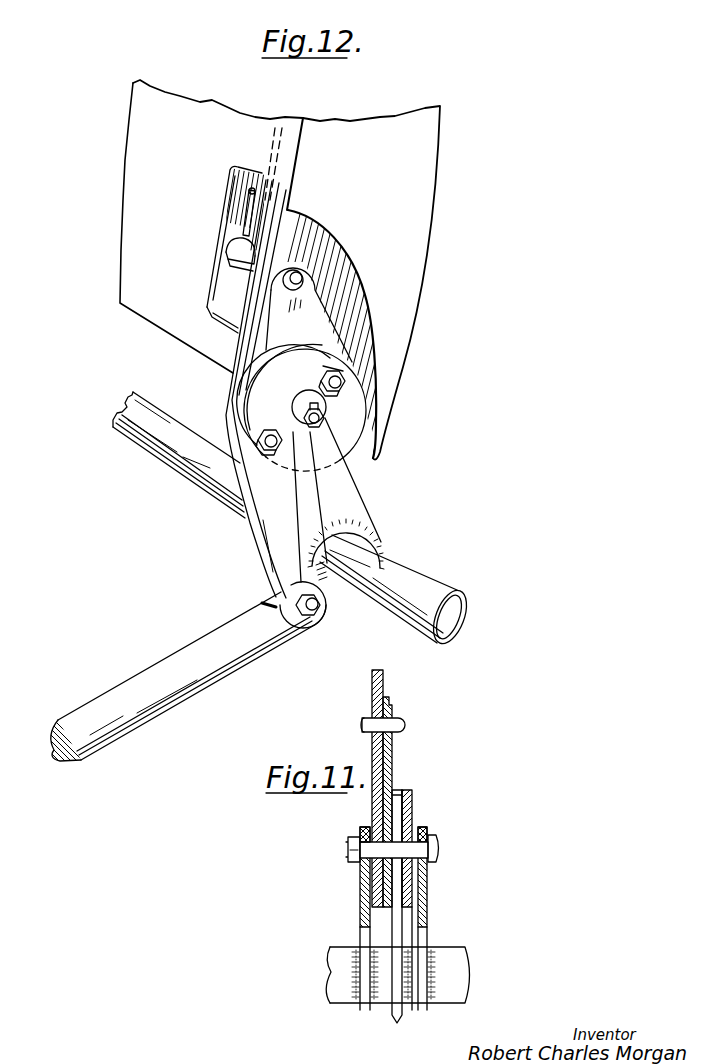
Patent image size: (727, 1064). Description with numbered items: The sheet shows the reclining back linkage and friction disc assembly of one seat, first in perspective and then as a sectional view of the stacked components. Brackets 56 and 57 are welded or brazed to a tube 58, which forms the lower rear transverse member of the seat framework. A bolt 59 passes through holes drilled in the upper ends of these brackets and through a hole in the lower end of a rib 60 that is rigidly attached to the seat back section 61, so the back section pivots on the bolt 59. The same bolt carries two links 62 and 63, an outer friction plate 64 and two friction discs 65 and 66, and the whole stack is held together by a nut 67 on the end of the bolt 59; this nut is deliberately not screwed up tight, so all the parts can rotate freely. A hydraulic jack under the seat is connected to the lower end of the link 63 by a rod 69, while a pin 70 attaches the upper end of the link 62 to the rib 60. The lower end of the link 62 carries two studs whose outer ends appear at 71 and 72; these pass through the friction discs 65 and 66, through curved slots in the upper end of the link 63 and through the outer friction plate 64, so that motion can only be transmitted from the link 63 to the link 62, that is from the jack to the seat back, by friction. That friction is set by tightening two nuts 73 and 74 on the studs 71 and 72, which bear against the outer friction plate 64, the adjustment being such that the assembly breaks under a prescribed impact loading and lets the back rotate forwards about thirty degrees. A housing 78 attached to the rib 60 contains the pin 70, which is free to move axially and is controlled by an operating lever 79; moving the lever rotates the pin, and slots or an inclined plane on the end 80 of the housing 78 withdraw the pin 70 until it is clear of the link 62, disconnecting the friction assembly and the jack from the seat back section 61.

In FIG. 12, the bracket 56 is at (348, 497).
In FIG. 11, the bracket 56 is at (428, 905).
In FIG. 11, the bracket 57 is at (362, 900).
In FIG. 12, the tube 58 is at (397, 563).
In FIG. 11, the tube 58 is at (452, 992).
In FIG. 12, the bolt 59 is at (302, 417).
In FIG. 11, the bolt 59 is at (392, 850).
In FIG. 12, the rib 60 is at (235, 371).
In FIG. 11, the rib 60 is at (373, 791).
In FIG. 12, the seat back section 61 is at (410, 306).
In FIG. 12, the link 62 is at (312, 328).
In FIG. 11, the link 62 is at (385, 754).
In FIG. 12, the link 63 is at (260, 537).
In FIG. 11, the link 63 is at (400, 793).
In FIG. 11, the outer friction plate 64 is at (412, 797).
In FIG. 11, the friction disc 65 is at (400, 818).
In FIG. 11, the friction disc 66 is at (426, 833).
In FIG. 12, the nut 67 is at (322, 410).
In FIG. 11, the nut 67 is at (432, 858).
In FIG. 12, the rod 69 is at (150, 703).
In FIG. 12, the pin 70 is at (232, 250).
In FIG. 11, the pin 70 is at (398, 728).
In FIG. 12, the stud 71 is at (346, 381).
In FIG. 12, the stud 72 is at (262, 449).
In FIG. 12, the nut 73 is at (333, 368).
In FIG. 12, the nut 74 is at (265, 437).
In FIG. 12, the housing 78 is at (232, 267).
In FIG. 12, the operating lever 79 is at (243, 222).
In FIG. 12, the end of the housing 80 is at (234, 238).